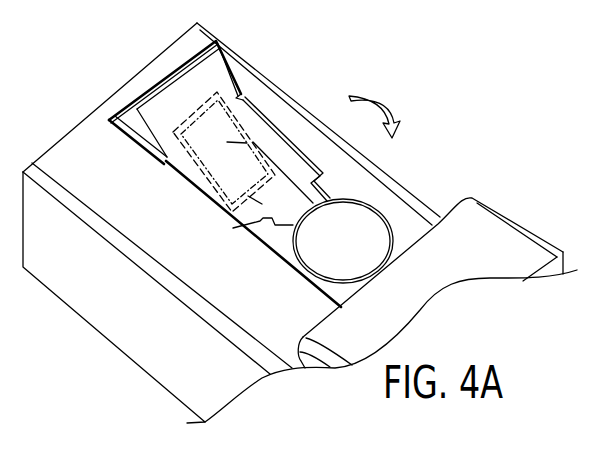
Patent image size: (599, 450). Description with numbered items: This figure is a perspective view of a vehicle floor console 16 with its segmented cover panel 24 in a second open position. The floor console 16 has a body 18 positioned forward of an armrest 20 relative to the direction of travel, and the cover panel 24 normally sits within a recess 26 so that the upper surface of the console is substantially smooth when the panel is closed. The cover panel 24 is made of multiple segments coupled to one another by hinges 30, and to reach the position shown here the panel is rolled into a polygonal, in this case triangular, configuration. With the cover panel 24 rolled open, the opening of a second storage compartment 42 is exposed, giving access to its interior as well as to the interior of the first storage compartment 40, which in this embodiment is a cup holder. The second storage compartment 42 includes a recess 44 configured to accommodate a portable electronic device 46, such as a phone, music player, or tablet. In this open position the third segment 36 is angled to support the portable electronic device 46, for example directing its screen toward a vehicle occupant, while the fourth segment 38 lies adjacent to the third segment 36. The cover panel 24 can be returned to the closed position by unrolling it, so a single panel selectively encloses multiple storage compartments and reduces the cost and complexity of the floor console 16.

The floor console 16 is at (420, 126).
The body 18 is at (200, 272).
The armrest 20 is at (511, 238).
The cover panel 24 is at (237, 29).
The recess 26 is at (283, 258).
The hinge 30 is at (174, 68).
The third segment 36 is at (403, 0).
The fourth segment 38 is at (222, 86).
The storage compartment 40 is at (368, 234).
The second storage compartment 42 is at (284, 152).
The recess 44 is at (255, 198).
The portable electronic device 46 is at (262, 97).